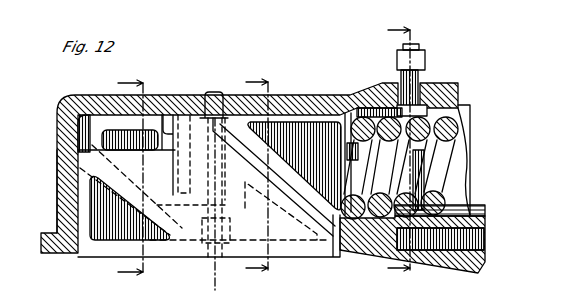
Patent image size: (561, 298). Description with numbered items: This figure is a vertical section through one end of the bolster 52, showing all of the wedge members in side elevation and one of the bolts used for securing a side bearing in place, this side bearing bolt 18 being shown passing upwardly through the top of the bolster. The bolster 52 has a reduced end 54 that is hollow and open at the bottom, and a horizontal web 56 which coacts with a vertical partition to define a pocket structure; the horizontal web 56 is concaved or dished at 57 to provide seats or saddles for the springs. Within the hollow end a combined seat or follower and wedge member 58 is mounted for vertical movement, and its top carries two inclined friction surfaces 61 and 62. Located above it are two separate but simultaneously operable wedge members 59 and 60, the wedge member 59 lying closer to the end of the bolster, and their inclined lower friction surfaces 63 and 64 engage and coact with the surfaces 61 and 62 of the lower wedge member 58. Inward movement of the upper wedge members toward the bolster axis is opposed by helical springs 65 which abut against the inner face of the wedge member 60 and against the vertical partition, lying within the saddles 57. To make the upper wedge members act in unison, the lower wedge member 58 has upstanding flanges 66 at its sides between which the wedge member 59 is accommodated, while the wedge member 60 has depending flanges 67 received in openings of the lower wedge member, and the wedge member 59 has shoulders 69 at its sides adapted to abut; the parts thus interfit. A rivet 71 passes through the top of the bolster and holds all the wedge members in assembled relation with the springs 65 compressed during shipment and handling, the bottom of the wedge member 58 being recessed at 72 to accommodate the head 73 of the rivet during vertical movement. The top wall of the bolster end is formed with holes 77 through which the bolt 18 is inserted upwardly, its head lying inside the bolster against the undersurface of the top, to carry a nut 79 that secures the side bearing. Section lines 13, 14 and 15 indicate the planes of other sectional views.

The section line 13- 13 is at (136, 180).
The section line 14- 14 is at (263, 178).
The section line 15- 15 is at (406, 150).
The adjusting screw 18 is at (402, 80).
The bolster 52 is at (458, 88).
The reduced end 54 is at (60, 116).
The horizontal web 56 is at (487, 222).
The seats or saddles 57 is at (463, 212).
The combined seat or follower and wedge member 58 is at (182, 260).
The wedge member 59 is at (148, 118).
The wedge member 60 is at (309, 125).
The inclined friction surface 61 is at (75, 174).
The inclined friction surface 62 is at (302, 203).
The inclined lower friction surface 63 is at (136, 180).
The inclined lower friction surface 64 is at (235, 140).
The helical springs 65 is at (443, 173).
The upstanding flanges 66 is at (190, 167).
The depending flanges 67 is at (203, 92).
The shoulders 69 is at (184, 131).
The rivet 71 is at (219, 95).
The recess 72 is at (223, 243).
The head 73 is at (212, 243).
The holes 77 is at (438, 85).
The nuts 79 is at (417, 62).